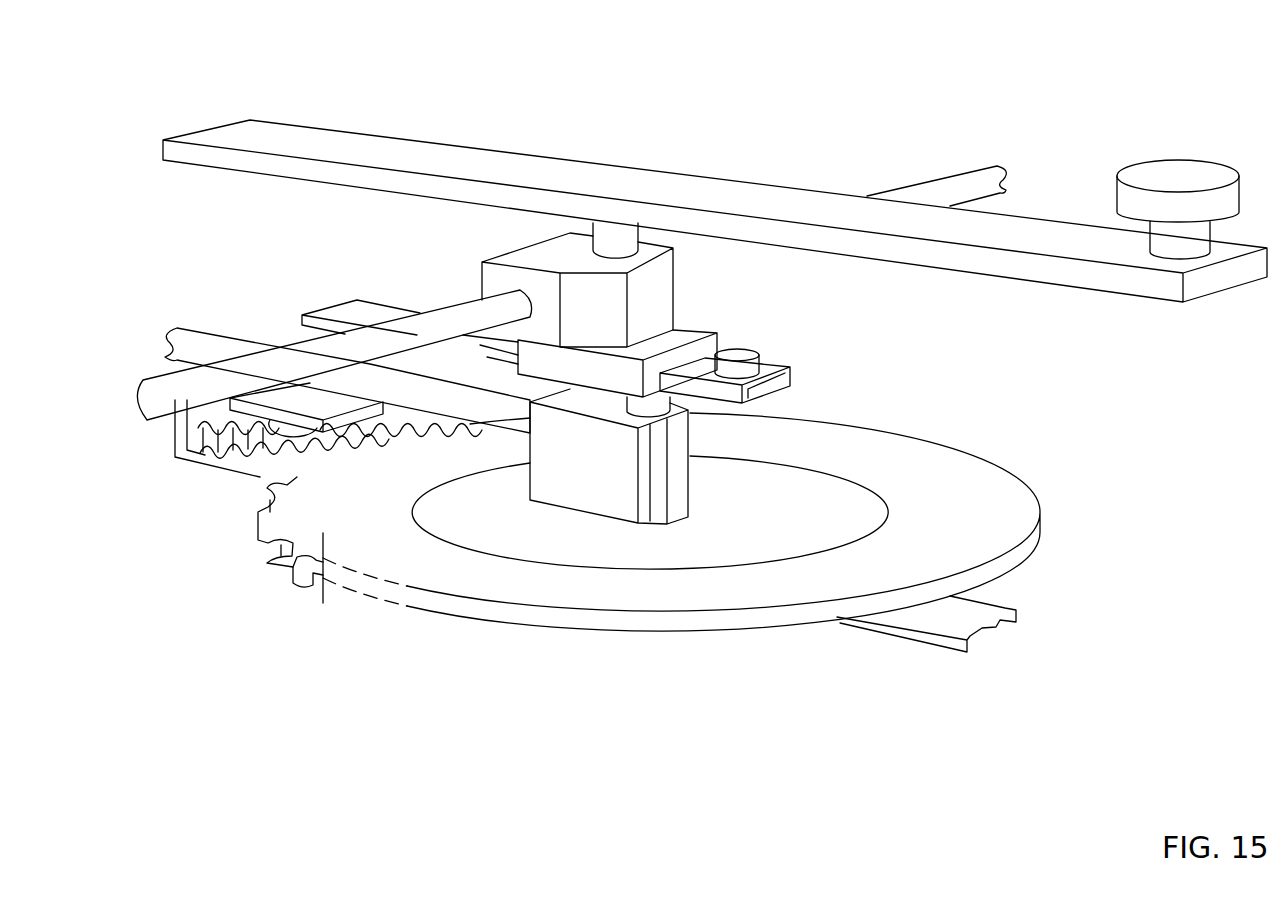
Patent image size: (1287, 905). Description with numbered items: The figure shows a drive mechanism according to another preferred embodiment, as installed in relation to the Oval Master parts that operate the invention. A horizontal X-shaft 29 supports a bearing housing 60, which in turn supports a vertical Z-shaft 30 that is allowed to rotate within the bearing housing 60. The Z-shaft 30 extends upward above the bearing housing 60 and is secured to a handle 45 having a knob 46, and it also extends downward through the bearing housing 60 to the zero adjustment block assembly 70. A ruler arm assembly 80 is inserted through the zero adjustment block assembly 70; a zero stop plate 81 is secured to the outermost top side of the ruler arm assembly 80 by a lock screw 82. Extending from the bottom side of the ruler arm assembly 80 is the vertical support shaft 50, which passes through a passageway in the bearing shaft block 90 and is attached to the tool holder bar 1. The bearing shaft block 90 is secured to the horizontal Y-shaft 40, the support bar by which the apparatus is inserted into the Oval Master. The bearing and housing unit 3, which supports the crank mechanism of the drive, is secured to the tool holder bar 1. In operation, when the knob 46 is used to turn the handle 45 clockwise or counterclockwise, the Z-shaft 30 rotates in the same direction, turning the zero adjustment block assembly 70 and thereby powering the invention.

The tool holder bar 1 is at (998, 600).
The bearing and housing unit 3 is at (177, 448).
The X-shaft 29 is at (982, 163).
The Z-shaft 30 is at (607, 244).
The Y-shaft 40 is at (208, 355).
The handle 45 is at (1045, 238).
The knob 46 is at (1188, 178).
The vertical support shaft 50 is at (657, 402).
The bearing housing 60 is at (540, 287).
The zero adjustment block assembly 70 is at (593, 362).
The ruler arm assembly 80 is at (360, 315).
The zero stop plate 81 is at (776, 363).
The lock screw 82 is at (745, 343).
The bearing shaft block 90 is at (593, 470).